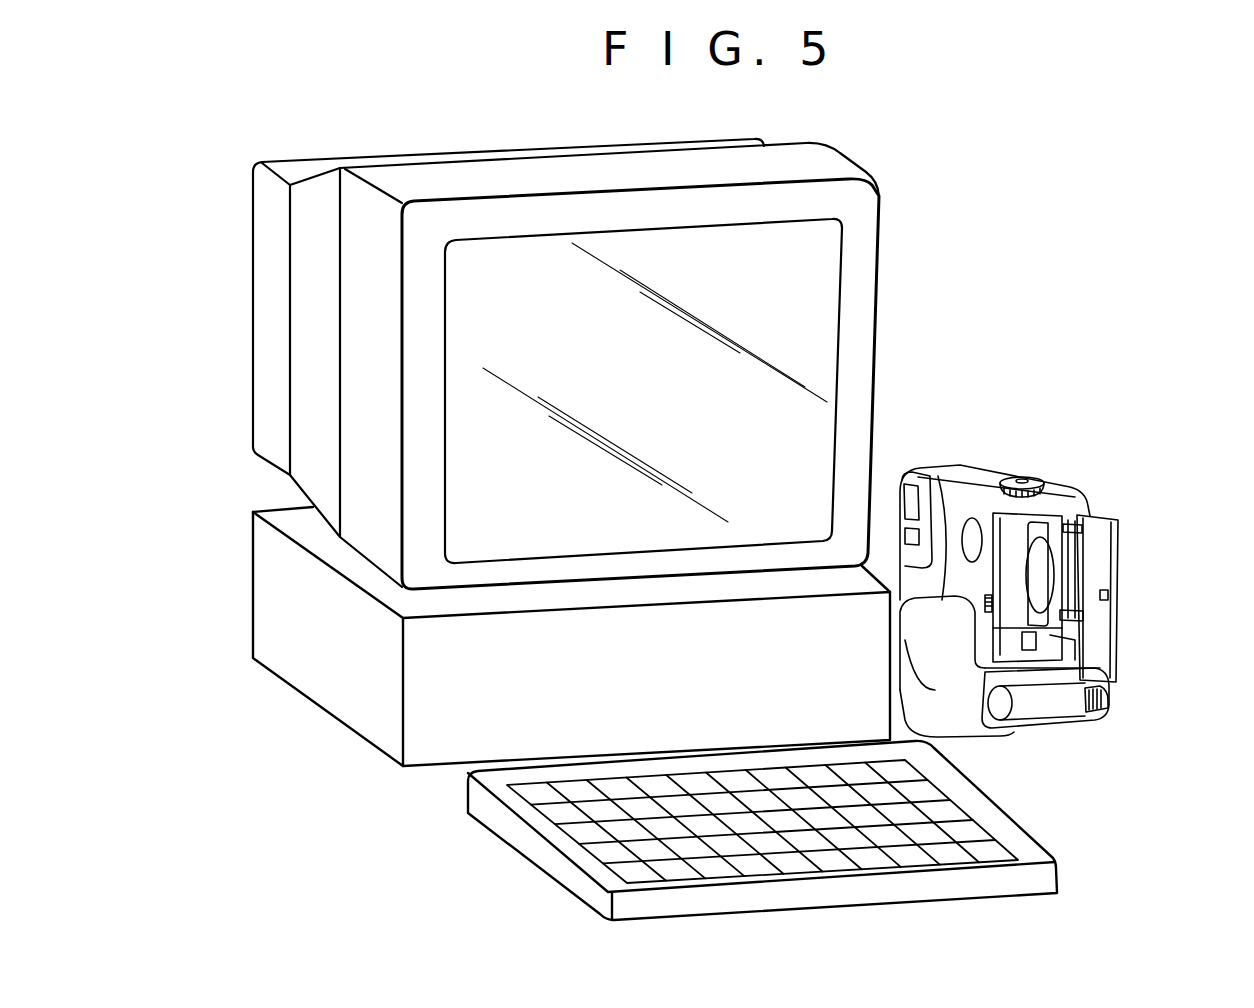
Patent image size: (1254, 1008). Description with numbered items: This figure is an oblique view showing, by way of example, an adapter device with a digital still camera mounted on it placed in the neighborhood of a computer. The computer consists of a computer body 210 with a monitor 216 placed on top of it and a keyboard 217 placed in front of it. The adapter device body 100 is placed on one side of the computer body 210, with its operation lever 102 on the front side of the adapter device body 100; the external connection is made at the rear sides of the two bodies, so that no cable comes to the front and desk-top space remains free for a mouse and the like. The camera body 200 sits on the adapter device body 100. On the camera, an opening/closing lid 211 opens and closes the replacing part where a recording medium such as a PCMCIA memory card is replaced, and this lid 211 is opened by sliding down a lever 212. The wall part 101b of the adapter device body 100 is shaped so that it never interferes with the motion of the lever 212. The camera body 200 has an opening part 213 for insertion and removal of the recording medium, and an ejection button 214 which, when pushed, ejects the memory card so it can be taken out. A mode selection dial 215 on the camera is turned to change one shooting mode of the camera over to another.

The camera body 200 is at (1056, 602).
The monitor 216 is at (413, 310).
The computer body 210 is at (278, 612).
The keyboard 217 is at (515, 836).
The opening/closing lid 211 is at (1102, 560).
The lever 212 is at (972, 495).
The opening part 213 is at (1040, 605).
The ejection button 214 is at (1030, 633).
The mode selection dial 215 is at (1043, 487).
The adapter device body 100 is at (1082, 718).
The wall part 101b is at (947, 635).
The operation lever 102 is at (1108, 702).